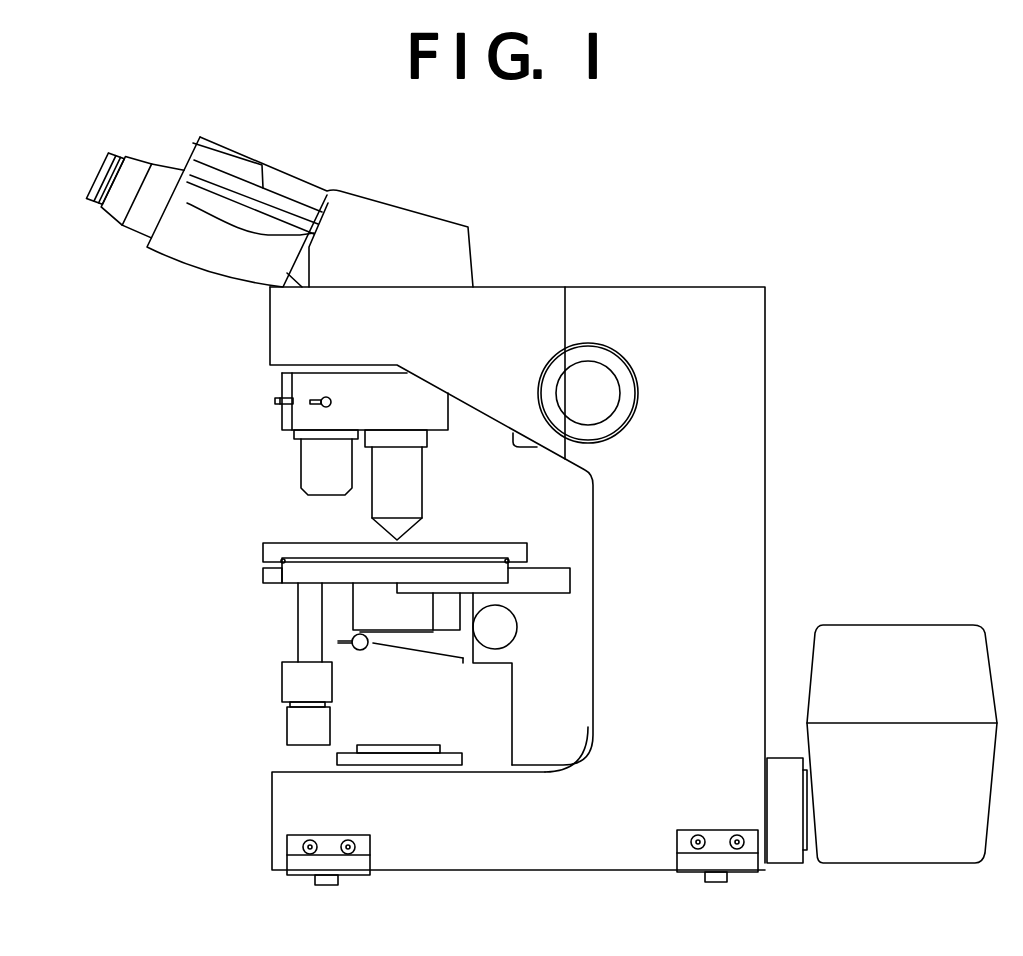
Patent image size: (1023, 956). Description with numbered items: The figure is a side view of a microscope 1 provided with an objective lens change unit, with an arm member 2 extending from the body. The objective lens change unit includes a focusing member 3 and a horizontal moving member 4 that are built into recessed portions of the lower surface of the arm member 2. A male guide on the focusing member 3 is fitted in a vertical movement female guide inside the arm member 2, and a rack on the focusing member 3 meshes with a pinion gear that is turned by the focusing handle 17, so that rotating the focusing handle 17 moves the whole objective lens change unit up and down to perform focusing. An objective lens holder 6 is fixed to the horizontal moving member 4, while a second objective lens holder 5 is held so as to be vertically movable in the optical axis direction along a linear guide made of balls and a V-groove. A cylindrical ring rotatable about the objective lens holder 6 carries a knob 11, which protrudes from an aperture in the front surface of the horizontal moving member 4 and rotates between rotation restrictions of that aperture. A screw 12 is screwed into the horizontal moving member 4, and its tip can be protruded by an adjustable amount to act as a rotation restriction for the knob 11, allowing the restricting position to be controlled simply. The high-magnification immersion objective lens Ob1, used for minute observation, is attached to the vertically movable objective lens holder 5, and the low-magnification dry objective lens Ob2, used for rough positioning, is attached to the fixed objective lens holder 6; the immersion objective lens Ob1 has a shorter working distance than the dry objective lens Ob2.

The microscope 1 is at (723, 285).
The arm member 2 is at (488, 312).
The focusing member 3 is at (276, 400).
The horizontal moving member 4 is at (323, 383).
The objective lens holder 5 is at (412, 437).
The objective lens holder 6 is at (308, 438).
The knob 11 is at (281, 405).
The screw 12 is at (312, 403).
The focusing handle 17 is at (598, 380).
The high-magnification immersion objective lens Ob1 is at (402, 485).
The low-magnification dry objective lens Ob2 is at (323, 473).